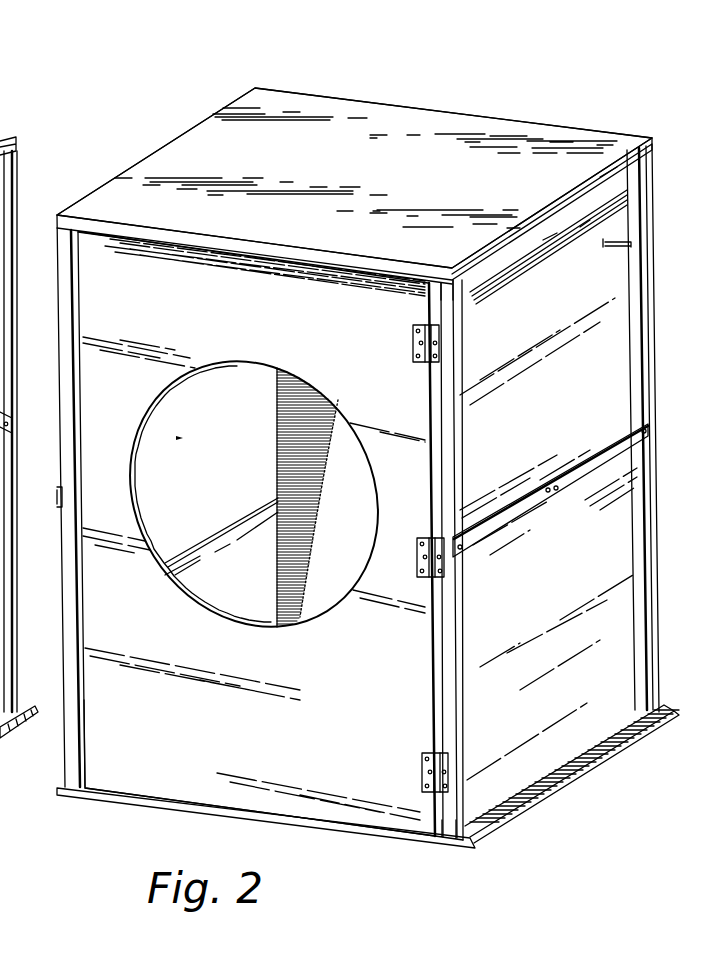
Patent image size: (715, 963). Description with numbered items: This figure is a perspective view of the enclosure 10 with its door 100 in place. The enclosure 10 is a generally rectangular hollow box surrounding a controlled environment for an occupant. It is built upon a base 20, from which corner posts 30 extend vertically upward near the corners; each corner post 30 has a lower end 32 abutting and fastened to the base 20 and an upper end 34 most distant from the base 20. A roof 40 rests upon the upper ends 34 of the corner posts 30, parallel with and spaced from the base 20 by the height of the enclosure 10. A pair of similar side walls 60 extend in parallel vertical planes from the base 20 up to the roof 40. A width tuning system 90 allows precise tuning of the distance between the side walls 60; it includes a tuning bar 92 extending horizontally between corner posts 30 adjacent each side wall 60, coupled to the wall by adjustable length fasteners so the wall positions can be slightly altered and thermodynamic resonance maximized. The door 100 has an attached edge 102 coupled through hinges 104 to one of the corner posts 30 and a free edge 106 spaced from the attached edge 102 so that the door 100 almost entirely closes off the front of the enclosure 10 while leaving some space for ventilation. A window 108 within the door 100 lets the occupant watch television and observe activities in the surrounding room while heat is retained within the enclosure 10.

The enclosure 10 is at (522, 96).
The base 20 is at (307, 827).
The corner posts 30 is at (10, 182).
The lower end 32 is at (453, 830).
The upper ends 34 is at (438, 295).
The roof 40 is at (303, 120).
The side walls 60 is at (556, 573).
The width tuning system 90 is at (612, 405).
The tuning bar 92 is at (57, 496).
The door 100 is at (157, 777).
The attached edge 102 is at (407, 405).
The hinges 104 is at (439, 357).
The free edge 106 is at (115, 365).
The window 108 is at (232, 362).